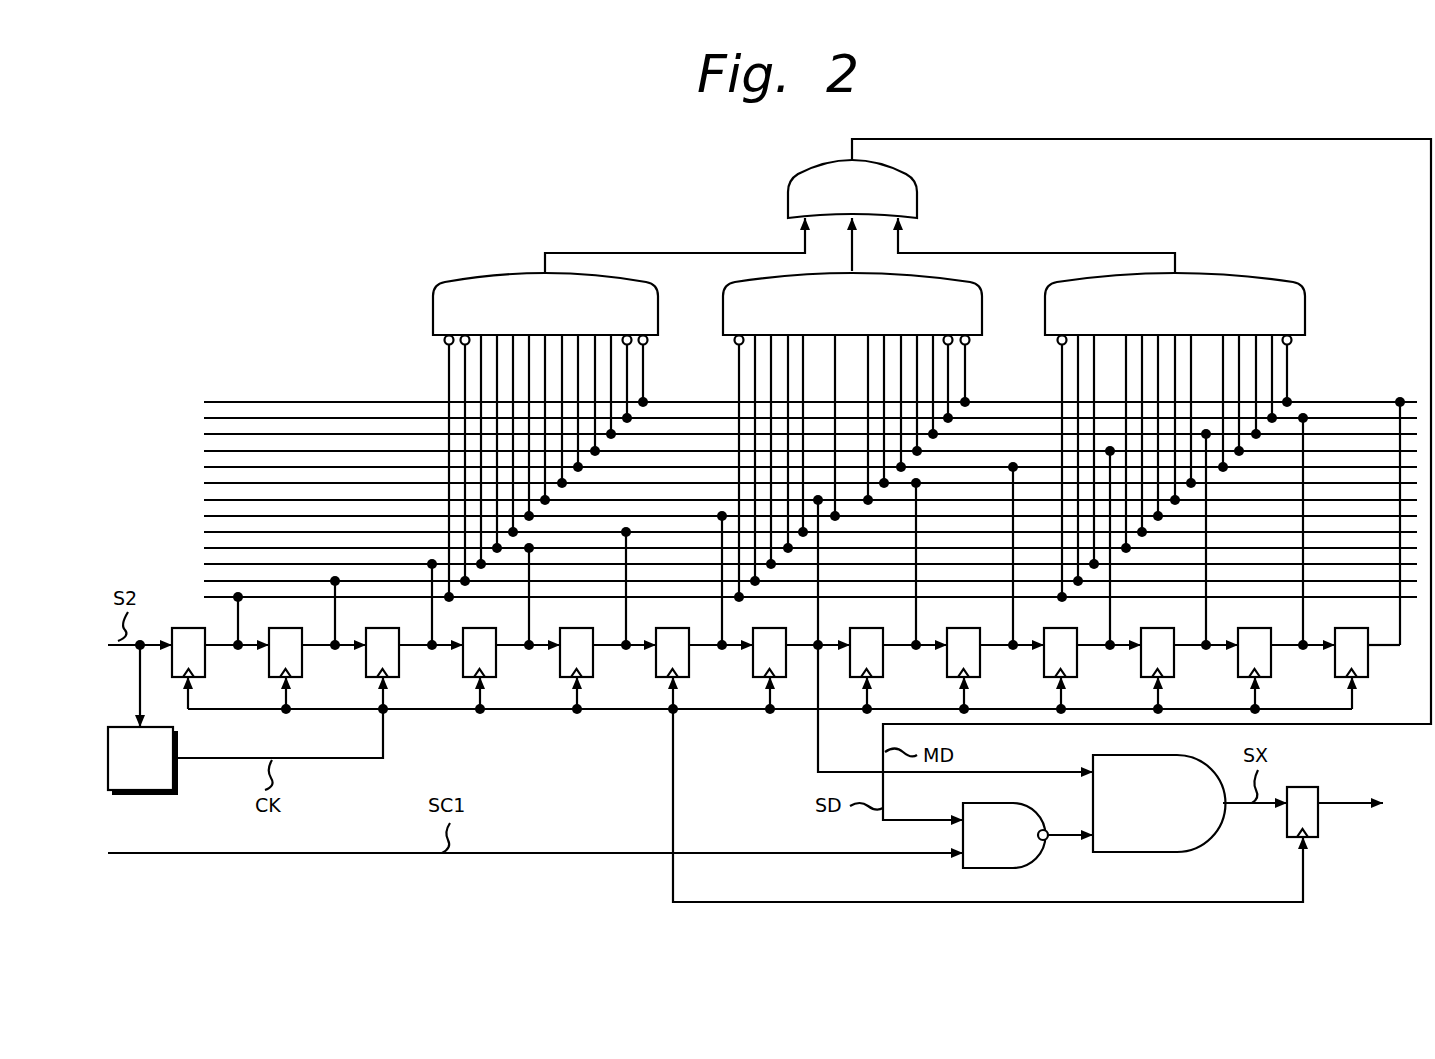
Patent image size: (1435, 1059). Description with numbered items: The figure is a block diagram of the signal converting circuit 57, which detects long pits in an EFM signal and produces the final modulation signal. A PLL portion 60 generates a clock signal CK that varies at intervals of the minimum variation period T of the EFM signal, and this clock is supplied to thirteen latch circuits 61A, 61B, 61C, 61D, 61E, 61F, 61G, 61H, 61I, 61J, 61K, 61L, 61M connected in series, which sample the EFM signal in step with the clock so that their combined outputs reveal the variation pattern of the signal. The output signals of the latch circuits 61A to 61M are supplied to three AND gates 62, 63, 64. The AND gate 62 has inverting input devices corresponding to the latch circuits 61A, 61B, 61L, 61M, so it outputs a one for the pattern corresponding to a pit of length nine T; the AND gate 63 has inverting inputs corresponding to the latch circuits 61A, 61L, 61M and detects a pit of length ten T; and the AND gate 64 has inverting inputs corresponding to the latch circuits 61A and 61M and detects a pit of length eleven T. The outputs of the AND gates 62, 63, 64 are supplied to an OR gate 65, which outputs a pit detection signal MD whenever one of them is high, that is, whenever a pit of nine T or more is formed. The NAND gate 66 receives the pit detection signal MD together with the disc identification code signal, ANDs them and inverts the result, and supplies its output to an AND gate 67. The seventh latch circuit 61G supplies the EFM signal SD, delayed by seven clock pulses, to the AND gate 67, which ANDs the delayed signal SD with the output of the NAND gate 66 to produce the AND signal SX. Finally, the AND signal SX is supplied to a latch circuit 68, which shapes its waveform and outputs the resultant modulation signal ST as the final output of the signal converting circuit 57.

The signal converting circuit 57 is at (690, 189).
The PLL portion 60 is at (143, 795).
The latch circuit 61A is at (190, 628).
The latch circuit 61B is at (269, 678).
The latch circuit 61C is at (366, 678).
The latch circuit 61D is at (463, 678).
The latch circuit 61E is at (560, 678).
The latch circuit 61F is at (656, 678).
The seventh latch circuit 61G is at (753, 678).
The latch circuit 61H is at (849, 678).
The latch circuit 61I is at (947, 678).
The latch circuit 61J is at (1044, 678).
The latch circuit 61K is at (1141, 678).
The latch circuit 61L is at (1238, 678).
The latch circuit 61M is at (1335, 678).
The AND gate 62 is at (433, 300).
The AND gate 63 is at (722, 306).
The AND gate 64 is at (1305, 298).
The OR gate 65 is at (917, 185).
The NAND gate 66 is at (993, 871).
The AND gate 67 is at (1160, 853).
The latch circuit 68 is at (1302, 787).